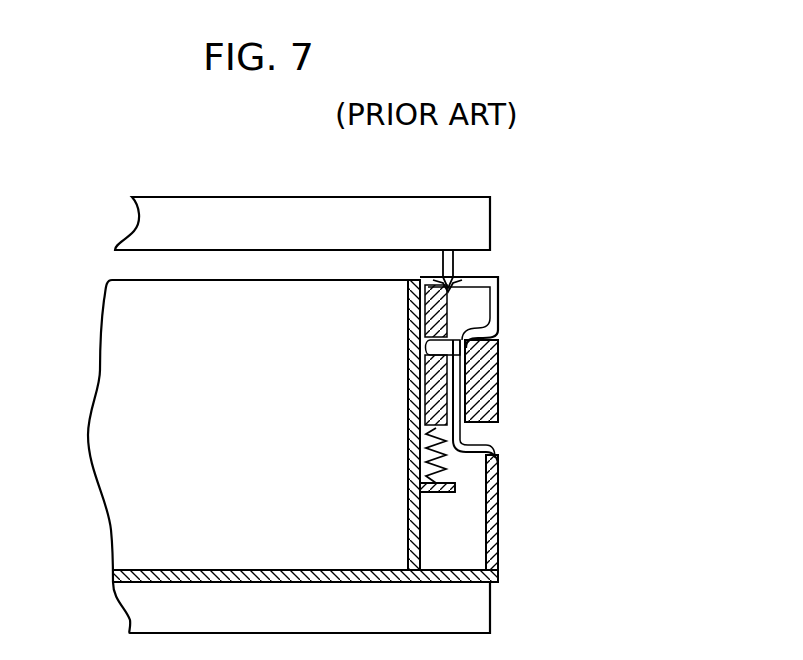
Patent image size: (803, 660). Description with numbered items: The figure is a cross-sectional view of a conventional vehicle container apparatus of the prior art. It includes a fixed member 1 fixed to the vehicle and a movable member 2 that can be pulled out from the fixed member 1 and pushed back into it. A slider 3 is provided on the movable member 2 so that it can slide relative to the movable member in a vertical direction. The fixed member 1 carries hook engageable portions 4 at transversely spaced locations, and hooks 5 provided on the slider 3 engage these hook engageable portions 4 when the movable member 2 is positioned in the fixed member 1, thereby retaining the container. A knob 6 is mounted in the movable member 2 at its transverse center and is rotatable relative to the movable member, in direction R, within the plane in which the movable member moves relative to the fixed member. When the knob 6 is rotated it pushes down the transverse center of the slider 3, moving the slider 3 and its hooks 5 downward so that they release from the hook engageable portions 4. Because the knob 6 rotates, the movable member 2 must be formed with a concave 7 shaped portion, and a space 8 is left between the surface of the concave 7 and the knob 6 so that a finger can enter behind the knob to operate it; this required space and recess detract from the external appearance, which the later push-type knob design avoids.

The fixed member 1 is at (303, 210).
The movable member 2 is at (420, 540).
The slider 3 is at (450, 310).
The hook engageable portion 4 is at (452, 263).
The hook 5 is at (443, 285).
The knob 6 is at (500, 410).
The concave shaped portion 7 is at (470, 450).
The space 8 is at (462, 433).
The direction of knob rotation R is at (503, 398).